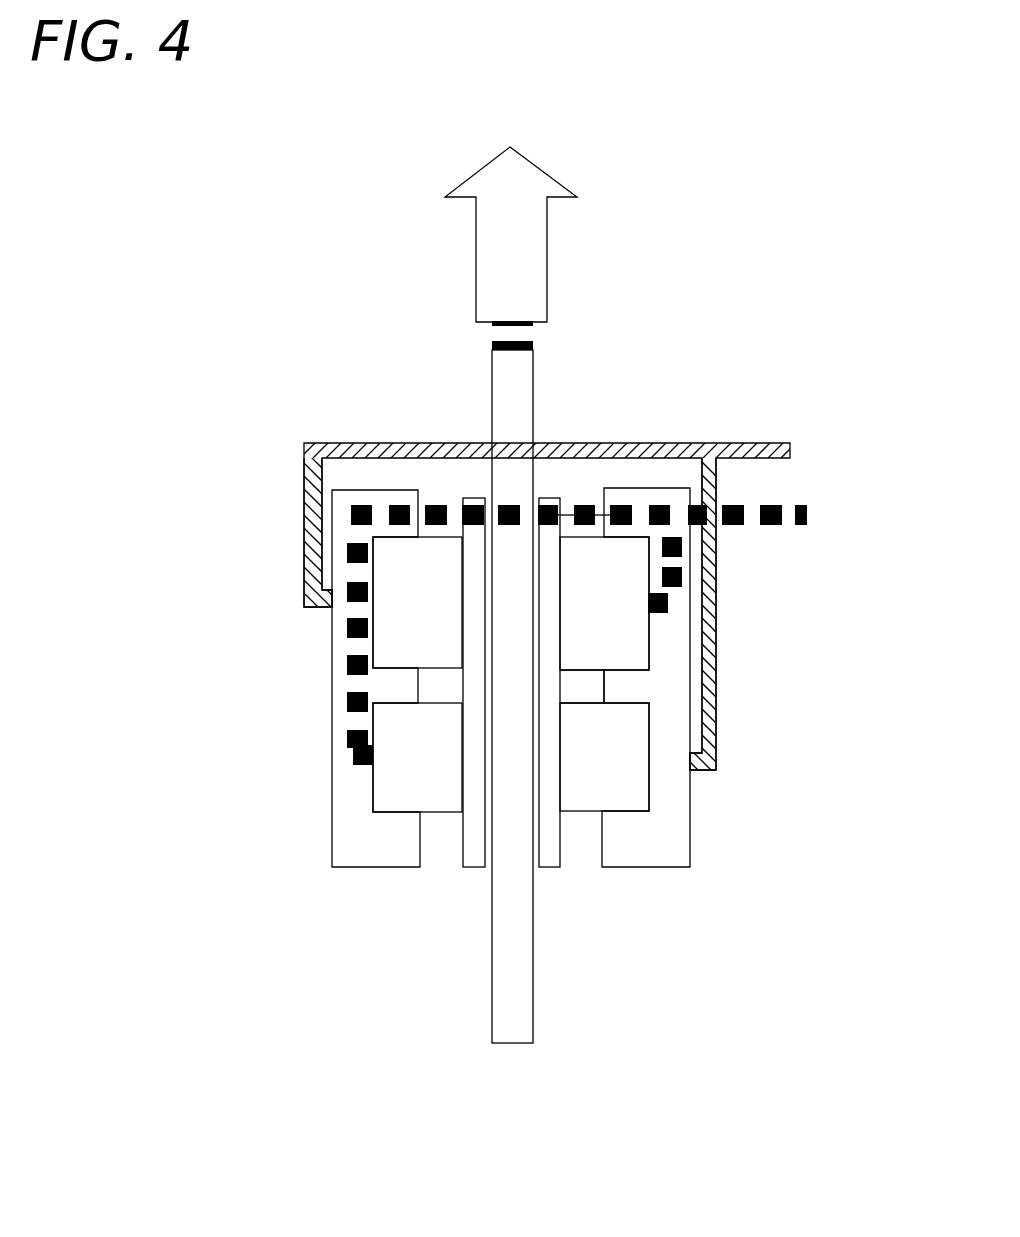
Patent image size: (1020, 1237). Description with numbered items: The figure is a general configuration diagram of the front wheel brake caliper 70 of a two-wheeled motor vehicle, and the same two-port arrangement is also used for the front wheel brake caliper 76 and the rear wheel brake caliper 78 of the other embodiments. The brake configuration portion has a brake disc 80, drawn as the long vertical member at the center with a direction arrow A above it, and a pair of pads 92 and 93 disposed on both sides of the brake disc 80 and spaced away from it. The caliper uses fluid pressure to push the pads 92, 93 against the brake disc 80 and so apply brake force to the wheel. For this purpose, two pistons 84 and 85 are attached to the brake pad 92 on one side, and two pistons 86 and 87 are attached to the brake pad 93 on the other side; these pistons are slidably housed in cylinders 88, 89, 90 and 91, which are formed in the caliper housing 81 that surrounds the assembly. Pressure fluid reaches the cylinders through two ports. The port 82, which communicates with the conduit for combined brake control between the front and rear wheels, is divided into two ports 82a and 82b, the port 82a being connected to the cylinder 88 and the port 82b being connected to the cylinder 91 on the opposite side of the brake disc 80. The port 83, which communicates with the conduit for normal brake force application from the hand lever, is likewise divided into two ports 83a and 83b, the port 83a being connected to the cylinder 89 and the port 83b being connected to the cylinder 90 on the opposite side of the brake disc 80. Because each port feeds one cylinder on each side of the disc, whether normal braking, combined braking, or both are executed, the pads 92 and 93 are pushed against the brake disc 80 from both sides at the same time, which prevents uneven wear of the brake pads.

The front wheel brake caliper 70 is at (491, 572).
The front wheel brake caliper 76 is at (491, 572).
The rear wheel brake caliper 78 is at (302, 282).
The rotation axis direction A is at (546, 170).
The brake disc 80 is at (490, 383).
The caliper housing 81 is at (680, 868).
The port 82 is at (740, 443).
The port 82a is at (340, 443).
The port 82b is at (717, 555).
The port 83 is at (812, 512).
The port 83a is at (436, 505).
The port 83b is at (682, 578).
The piston 84 is at (390, 640).
The piston 85 is at (385, 785).
The piston 86 is at (620, 638).
The piston 87 is at (580, 800).
The cylinder 88 is at (375, 548).
The cylinder 89 is at (380, 712).
The cylinder 90 is at (640, 670).
The cylinder 91 is at (648, 786).
The pad 92 is at (470, 868).
The pad 93 is at (553, 868).